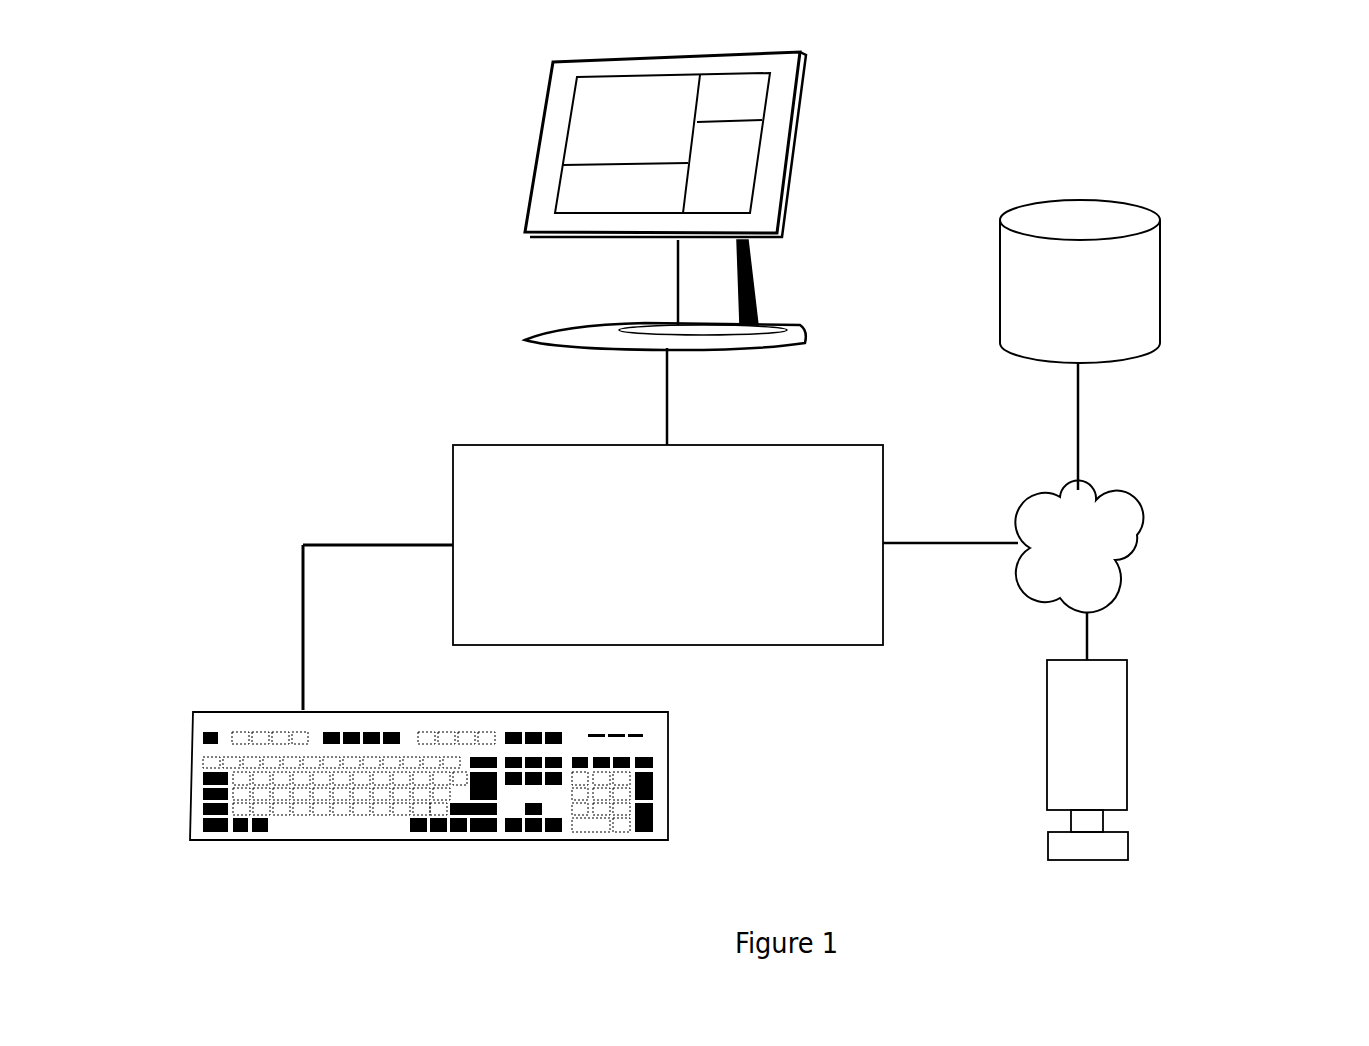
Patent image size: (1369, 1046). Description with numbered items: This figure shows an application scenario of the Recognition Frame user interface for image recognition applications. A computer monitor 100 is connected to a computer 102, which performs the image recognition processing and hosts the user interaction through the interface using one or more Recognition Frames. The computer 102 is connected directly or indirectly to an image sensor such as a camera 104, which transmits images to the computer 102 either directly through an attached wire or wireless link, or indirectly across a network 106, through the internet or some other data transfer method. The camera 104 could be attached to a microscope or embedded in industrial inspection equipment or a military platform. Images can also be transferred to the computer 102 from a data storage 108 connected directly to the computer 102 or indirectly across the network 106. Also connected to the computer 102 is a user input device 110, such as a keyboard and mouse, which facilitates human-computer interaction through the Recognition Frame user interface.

The computer monitor 100 is at (800, 122).
The computer 102 is at (525, 495).
The camera 104 is at (1087, 737).
The network 106 is at (1080, 547).
The data storage 108 is at (1135, 267).
The user input device 110 is at (273, 762).